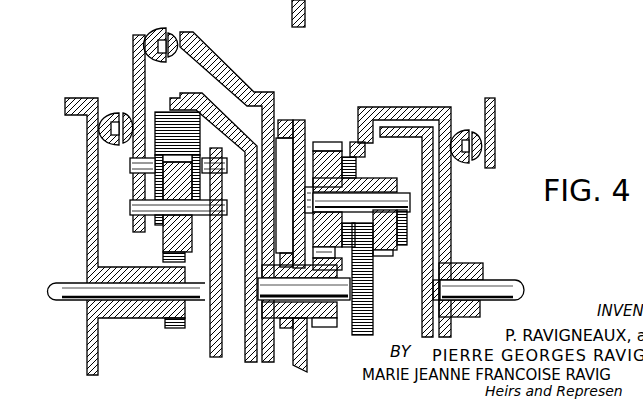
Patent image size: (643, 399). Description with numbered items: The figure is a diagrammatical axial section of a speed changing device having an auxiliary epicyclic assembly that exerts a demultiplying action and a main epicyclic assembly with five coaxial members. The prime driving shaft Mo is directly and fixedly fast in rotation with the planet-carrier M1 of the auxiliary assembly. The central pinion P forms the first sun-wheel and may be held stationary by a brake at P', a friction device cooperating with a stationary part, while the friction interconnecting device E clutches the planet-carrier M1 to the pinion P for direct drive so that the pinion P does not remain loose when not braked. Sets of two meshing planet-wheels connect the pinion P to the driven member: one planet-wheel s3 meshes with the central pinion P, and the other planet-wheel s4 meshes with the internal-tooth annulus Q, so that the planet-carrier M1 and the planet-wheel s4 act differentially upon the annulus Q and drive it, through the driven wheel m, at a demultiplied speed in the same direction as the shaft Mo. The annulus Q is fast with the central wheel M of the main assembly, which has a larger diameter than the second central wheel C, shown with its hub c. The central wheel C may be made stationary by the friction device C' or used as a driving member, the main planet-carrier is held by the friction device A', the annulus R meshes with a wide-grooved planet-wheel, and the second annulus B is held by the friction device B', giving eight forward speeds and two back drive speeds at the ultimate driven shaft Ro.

The brake for central pinion P P' is at (112, 220).
The friction interconnecting device E is at (152, 28).
The friction device for central wheel C C' is at (227, 197).
The internal-tooth annulus Q is at (186, 97).
The planet-wheel s4 is at (160, 113).
The planet-wheel s3 is at (163, 240).
The planet-carrier M1 is at (289, 8).
The central pinion P is at (174, 339).
The prime driving shaft Mo is at (60, 285).
The friction device for planet-carrier A A' is at (291, 229).
The second central wheel c is at (327, 143).
The second central wheel C is at (327, 286).
The driven wheel of the auxiliary assembly m is at (410, 246).
The central wheel M is at (366, 333).
The second annulus B is at (420, 205).
The annulus R is at (422, 281).
The ultimate driven shaft Ro is at (513, 281).
The friction device for annulus B B' is at (472, 129).